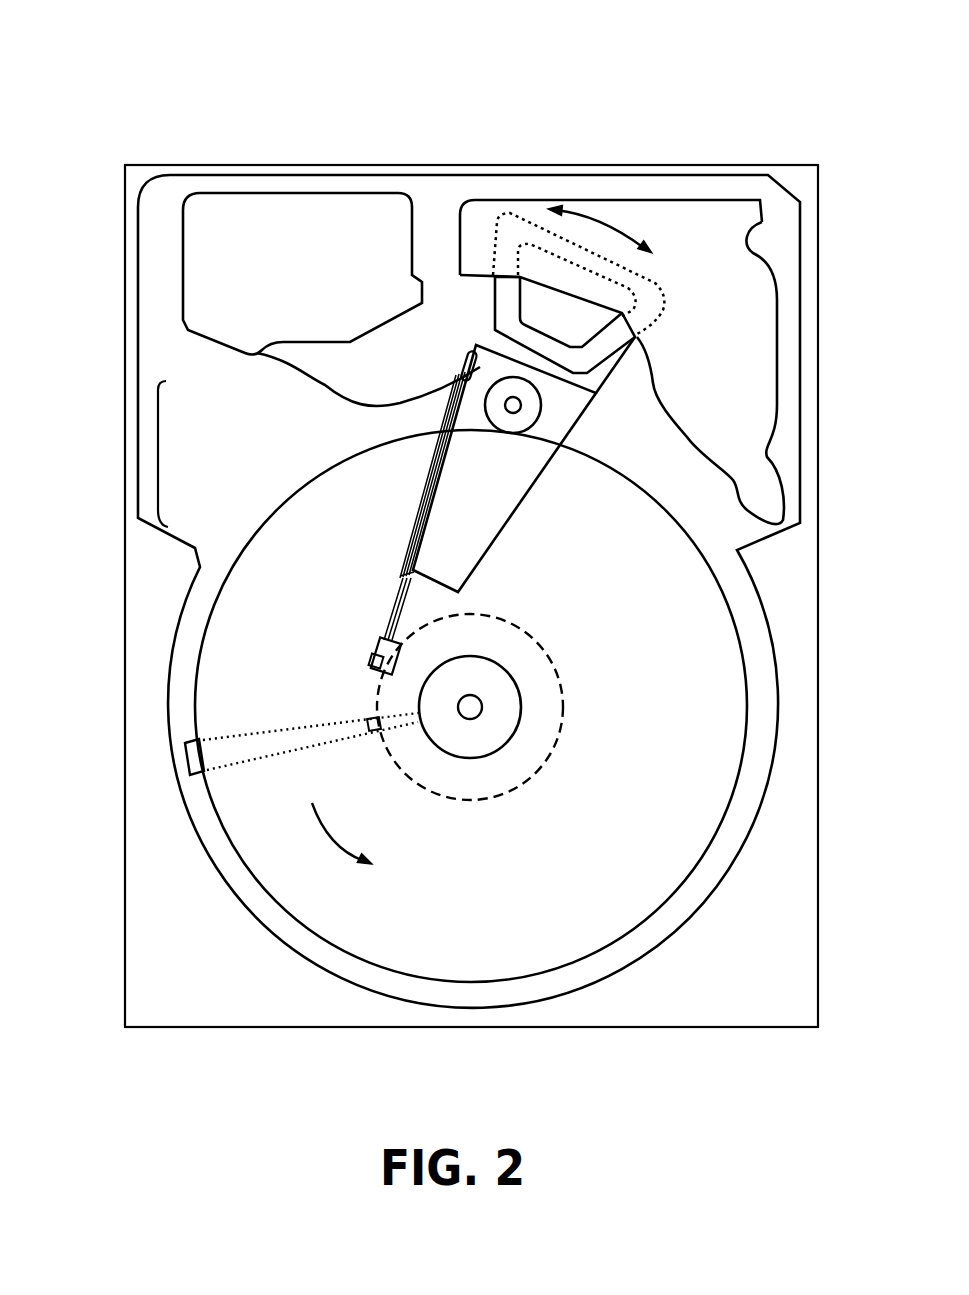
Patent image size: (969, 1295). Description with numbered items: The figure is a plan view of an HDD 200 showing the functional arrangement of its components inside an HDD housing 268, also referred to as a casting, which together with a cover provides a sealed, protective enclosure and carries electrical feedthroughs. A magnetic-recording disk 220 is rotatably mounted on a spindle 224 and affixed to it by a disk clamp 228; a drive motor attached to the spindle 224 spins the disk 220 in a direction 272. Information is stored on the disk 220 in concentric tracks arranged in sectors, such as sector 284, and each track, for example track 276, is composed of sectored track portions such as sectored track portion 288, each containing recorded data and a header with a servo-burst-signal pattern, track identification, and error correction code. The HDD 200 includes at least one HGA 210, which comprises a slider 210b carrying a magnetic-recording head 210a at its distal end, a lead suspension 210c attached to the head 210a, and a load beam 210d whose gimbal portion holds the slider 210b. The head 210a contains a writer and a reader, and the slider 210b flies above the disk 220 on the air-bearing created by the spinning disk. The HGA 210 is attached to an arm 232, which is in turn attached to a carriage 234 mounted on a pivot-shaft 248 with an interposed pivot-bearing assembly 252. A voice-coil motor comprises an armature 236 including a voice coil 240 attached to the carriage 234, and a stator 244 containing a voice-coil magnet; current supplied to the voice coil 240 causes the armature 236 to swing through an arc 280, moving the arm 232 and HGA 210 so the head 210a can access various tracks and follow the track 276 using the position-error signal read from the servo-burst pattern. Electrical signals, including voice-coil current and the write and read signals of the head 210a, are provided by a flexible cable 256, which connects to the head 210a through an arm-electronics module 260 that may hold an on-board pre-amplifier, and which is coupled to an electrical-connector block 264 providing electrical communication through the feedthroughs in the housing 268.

The HDD 200 is at (88, 88).
The HDD housing 268 is at (797, 176).
The electrical-connector block 264 is at (210, 270).
The flexible cable 256 is at (317, 378).
The voice coil 240 is at (508, 288).
The stator 244 is at (740, 300).
The armature 236 is at (490, 315).
The arc 280 is at (603, 213).
The arm 232 is at (460, 530).
The carriage 234 is at (533, 440).
The pivot-bearing assembly 252 is at (527, 417).
The pivot-shaft 248 is at (517, 403).
The arm-electronics module 260 is at (460, 366).
The HGA 210 is at (156, 452).
The magnetic-recording head 210a is at (378, 645).
The slider 210b is at (393, 615).
The lead suspension 210c is at (397, 590).
The load beam 210d is at (400, 570).
The magnetic-recording disk 220 is at (665, 655).
The track 276 is at (553, 660).
The disk clamp 228 is at (498, 725).
The spindle 224 is at (470, 707).
The sector 284 is at (186, 754).
The sectored track portion 288 is at (365, 724).
The direction 272 is at (370, 832).